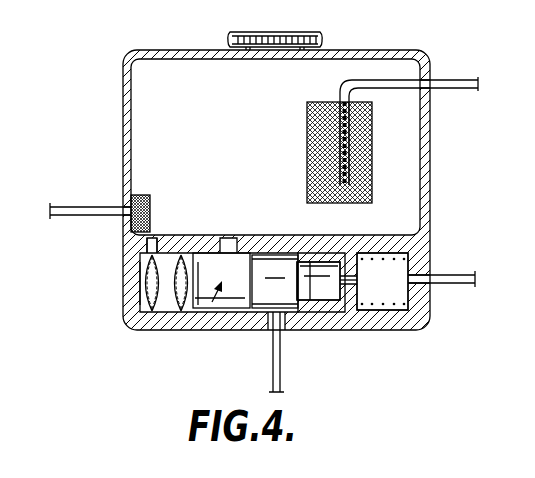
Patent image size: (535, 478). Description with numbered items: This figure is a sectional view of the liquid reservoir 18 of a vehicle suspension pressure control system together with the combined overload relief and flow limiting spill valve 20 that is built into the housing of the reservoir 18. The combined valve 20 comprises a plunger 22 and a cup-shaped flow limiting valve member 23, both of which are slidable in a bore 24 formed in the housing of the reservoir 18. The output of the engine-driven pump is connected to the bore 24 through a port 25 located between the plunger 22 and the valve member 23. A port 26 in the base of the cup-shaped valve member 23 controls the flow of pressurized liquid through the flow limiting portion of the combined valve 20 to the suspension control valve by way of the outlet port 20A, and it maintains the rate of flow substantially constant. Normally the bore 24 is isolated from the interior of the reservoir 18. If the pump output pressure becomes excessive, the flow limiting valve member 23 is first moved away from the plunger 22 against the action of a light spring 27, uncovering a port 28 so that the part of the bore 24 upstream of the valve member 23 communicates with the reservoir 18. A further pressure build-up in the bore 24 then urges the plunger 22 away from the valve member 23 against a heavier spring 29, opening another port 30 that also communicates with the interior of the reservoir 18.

The liquid reservoir 18 is at (115, 127).
The combined overload relief and flow limiting spill valve 20 is at (190, 327).
The outlet port 20A is at (412, 274).
The plunger 22 is at (205, 252).
The cup-shaped flow limiting valve member 23 is at (341, 258).
The bore 24 is at (266, 255).
The port 25 is at (272, 318).
The port 26 is at (350, 284).
The light spring 27 is at (384, 307).
The port 28 is at (323, 246).
The heavier spring 29 is at (145, 287).
The port 30 is at (152, 248).